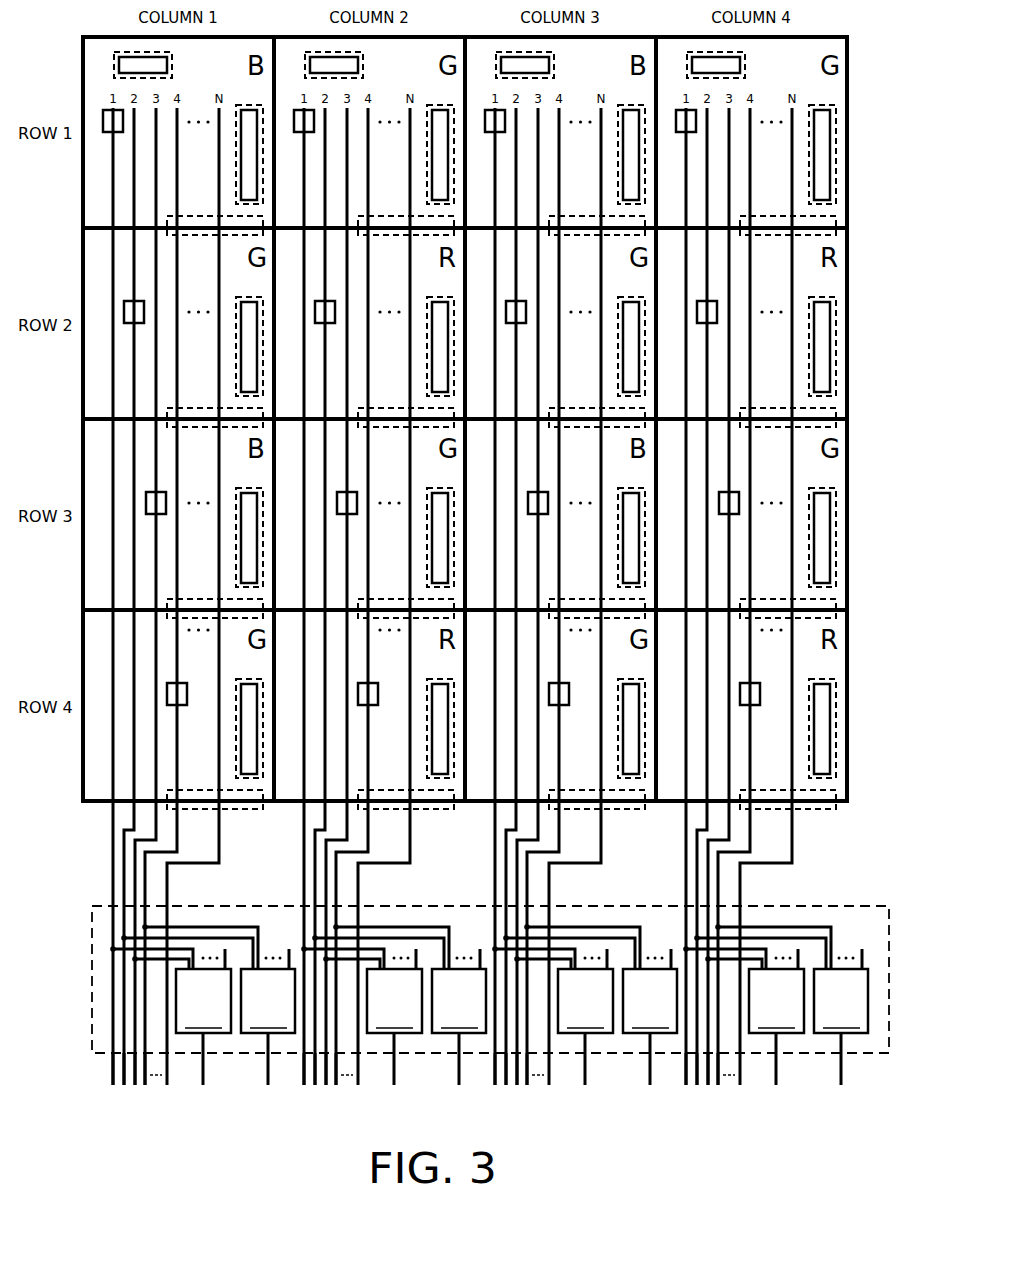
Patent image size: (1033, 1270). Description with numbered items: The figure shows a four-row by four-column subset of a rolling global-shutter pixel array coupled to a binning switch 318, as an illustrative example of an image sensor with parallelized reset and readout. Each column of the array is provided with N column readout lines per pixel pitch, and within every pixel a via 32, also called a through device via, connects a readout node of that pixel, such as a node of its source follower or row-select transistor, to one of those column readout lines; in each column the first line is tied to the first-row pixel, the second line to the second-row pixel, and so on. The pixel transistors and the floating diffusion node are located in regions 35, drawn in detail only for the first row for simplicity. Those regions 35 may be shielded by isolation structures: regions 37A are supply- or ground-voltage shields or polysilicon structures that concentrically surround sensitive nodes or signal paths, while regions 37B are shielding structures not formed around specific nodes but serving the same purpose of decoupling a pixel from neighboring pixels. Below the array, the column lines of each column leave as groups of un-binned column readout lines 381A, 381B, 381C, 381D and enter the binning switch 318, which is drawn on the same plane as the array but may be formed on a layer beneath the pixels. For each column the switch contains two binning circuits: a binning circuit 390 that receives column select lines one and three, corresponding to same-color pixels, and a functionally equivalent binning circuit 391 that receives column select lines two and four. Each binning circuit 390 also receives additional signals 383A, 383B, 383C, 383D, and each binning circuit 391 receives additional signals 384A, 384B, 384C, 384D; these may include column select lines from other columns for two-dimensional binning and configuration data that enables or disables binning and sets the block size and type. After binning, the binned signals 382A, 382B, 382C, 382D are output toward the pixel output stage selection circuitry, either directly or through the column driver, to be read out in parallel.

The via 32 is at (103, 121).
The region 35 is at (250, 117).
The region with shielding or isolation structures 37A is at (236, 163).
The region with isolation or shielding structures 37B is at (210, 216).
The binning switch 318 is at (92, 981).
The group of un-binned column readout lines 381A is at (151, 1092).
The group of un-binned column readout lines 381B is at (342, 1092).
The group of un-binned column readout lines 381C is at (533, 1092).
The group of un-binned column readout lines 381D is at (724, 1092).
The binned signals 382A is at (198, 1092).
The binned signals 382B is at (389, 1092).
The binned signals 382C is at (580, 1092).
The binned signals 382D is at (771, 1092).
The additional signals 383A is at (225, 949).
The additional signals 383B is at (416, 949).
The additional signals 383C is at (607, 949).
The additional signals 383D is at (798, 949).
The additional signals 384A is at (288, 949).
The additional signals 384B is at (479, 949).
The additional signals 384C is at (670, 949).
The additional signals 384D is at (861, 949).
The binning circuit 390 is at (490, 1001).
The binning circuit 391 is at (554, 1001).